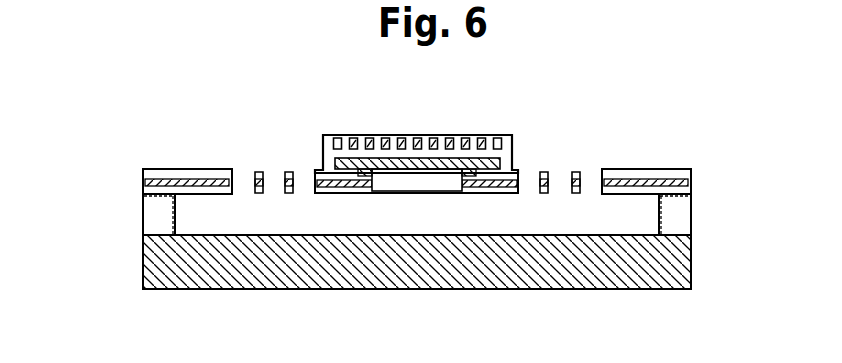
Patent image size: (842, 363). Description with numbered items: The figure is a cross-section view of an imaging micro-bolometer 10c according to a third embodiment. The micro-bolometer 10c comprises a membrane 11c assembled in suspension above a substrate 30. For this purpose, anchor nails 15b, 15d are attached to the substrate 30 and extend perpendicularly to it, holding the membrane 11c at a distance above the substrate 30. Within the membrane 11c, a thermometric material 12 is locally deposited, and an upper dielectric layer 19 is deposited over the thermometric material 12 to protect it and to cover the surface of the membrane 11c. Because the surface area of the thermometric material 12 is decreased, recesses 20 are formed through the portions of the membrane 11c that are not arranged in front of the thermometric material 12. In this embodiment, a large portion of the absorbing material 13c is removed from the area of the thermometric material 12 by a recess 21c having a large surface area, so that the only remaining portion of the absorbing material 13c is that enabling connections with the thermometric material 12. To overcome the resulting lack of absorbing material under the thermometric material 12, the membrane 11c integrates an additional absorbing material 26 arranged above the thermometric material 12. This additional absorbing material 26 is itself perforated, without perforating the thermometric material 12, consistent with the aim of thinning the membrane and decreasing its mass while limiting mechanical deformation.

The imaging micro-bolometer 10c is at (98, 143).
The membrane 11c is at (664, 146).
The thermometric material 12 is at (487, 137).
The absorbing material 13c is at (623, 182).
The anchor nail 15b is at (158, 212).
The anchor nail 15d is at (673, 217).
The upper dielectric layer 19 is at (330, 134).
The recesses 20 is at (275, 178).
The recess 21c is at (417, 187).
The additional absorbing material 26 is at (372, 145).
The substrate 30 is at (340, 266).